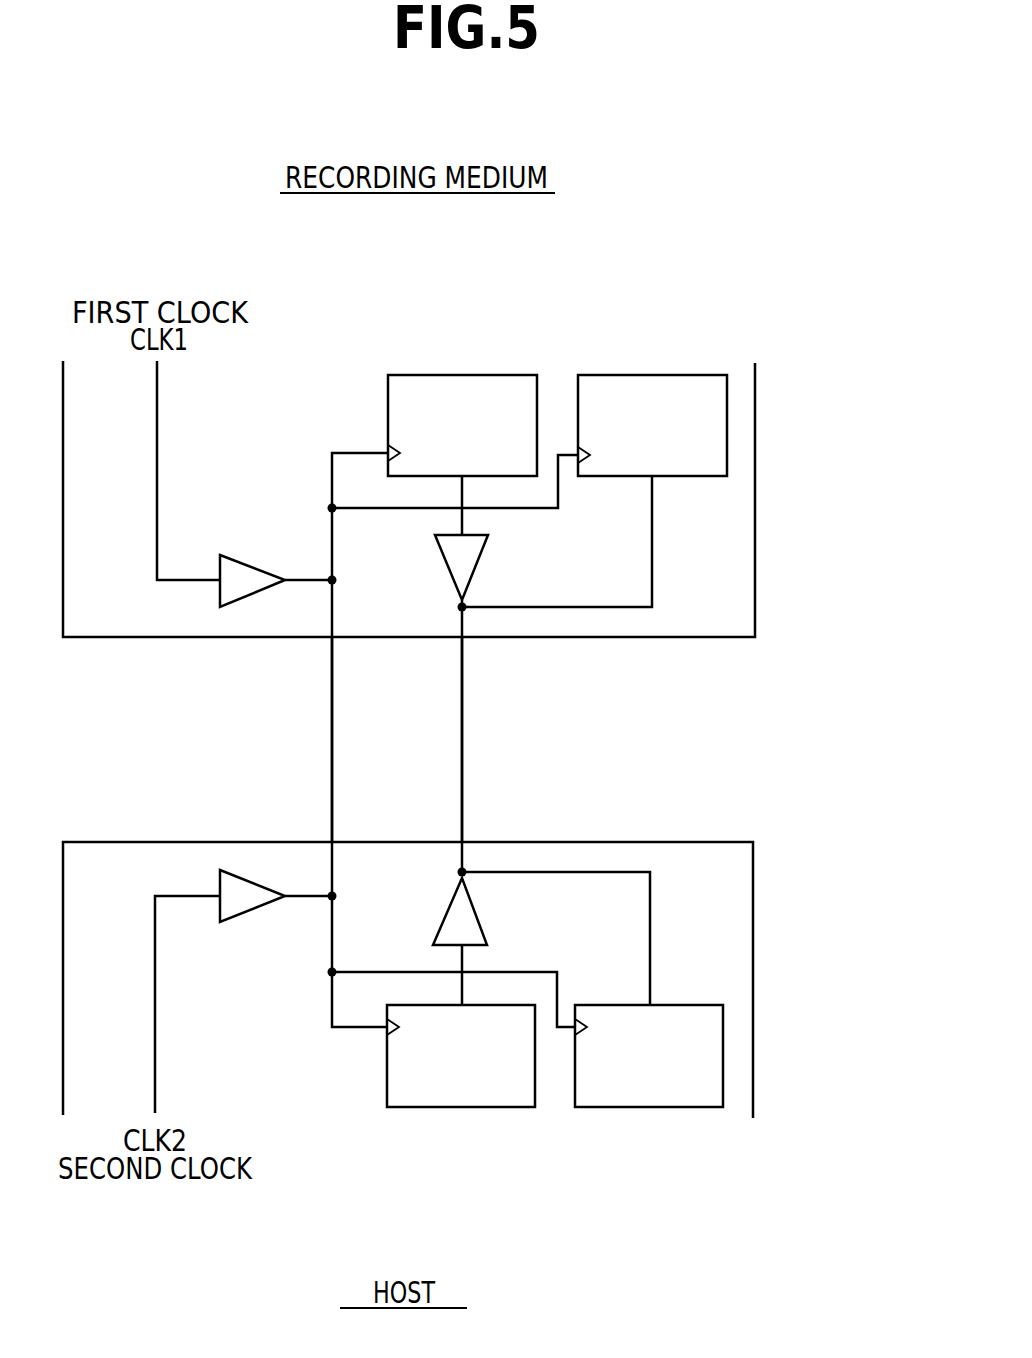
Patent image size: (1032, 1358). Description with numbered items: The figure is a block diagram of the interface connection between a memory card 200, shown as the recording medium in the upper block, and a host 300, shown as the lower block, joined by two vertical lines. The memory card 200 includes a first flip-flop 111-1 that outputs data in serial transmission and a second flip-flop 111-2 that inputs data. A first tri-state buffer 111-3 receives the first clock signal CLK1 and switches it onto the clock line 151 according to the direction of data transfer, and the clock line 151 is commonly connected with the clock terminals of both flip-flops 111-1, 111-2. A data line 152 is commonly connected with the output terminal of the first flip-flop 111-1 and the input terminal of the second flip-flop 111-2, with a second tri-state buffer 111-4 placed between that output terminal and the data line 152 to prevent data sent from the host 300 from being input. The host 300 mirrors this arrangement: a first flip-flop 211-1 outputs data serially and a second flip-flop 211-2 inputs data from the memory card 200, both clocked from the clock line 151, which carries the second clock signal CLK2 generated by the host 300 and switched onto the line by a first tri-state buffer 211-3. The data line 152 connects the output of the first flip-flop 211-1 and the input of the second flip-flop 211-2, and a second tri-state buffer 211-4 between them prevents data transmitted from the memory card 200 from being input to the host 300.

The first flip-flop 111-1 is at (455, 375).
The second flip-flop 111-2 is at (638, 375).
The first tri-state buffer 111-3 is at (250, 570).
The second tri-state buffer 111-4 is at (468, 558).
The clock line 151 is at (332, 722).
The data line 152 is at (462, 730).
The memory card 200 is at (755, 510).
The first flip-flop 211-1 is at (462, 1107).
The second flip-flop 211-2 is at (643, 1107).
The first tri-state buffer 211-3 is at (247, 907).
The second tri-state buffer 211-4 is at (467, 908).
The host 300 is at (753, 935).